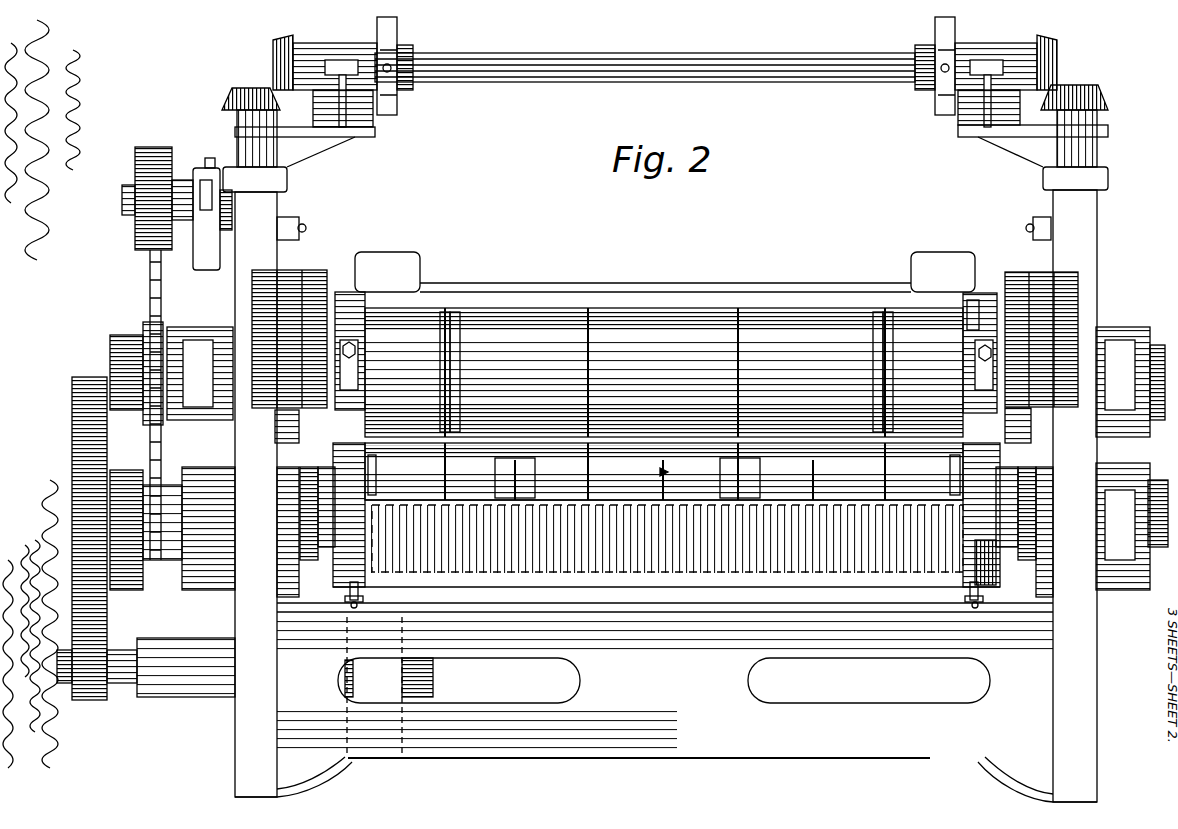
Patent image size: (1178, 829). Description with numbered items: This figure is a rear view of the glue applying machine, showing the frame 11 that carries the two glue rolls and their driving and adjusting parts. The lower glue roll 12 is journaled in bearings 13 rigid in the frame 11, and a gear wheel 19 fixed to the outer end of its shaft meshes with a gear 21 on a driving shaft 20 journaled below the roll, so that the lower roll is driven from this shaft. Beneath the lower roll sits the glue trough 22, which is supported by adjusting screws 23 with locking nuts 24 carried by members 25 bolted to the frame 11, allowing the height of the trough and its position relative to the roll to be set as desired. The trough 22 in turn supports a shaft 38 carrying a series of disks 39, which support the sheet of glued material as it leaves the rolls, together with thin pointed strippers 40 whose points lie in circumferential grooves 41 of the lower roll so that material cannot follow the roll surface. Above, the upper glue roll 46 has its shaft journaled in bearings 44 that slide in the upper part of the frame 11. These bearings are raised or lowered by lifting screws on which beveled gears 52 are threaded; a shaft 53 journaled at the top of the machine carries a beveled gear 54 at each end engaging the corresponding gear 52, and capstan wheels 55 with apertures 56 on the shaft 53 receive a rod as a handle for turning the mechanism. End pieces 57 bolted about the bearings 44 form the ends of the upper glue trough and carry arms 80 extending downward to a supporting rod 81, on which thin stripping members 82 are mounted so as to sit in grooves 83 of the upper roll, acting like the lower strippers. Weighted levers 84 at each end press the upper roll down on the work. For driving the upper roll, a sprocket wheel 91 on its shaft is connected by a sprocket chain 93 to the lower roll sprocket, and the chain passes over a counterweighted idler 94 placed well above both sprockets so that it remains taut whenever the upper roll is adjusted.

The frame 11 is at (252, 748).
The lower glue roll 12 is at (627, 457).
The bearings 13 is at (210, 572).
The gear wheel 19 is at (74, 402).
The driving shaft 20 is at (60, 687).
The gear 21 is at (88, 687).
The glue trough 22 is at (665, 550).
The adjusting screws 23 is at (350, 598).
The locking nuts 24 is at (354, 602).
The members 25 is at (477, 640).
The shaft 38 is at (790, 480).
The disks 39 is at (377, 497).
The strippers 40 is at (590, 478).
The circumferential grooves 41 is at (515, 498).
The bearings 44 is at (193, 343).
The upper glue roll 46 is at (528, 330).
The beveled gears 52 is at (235, 92).
The shaft 53 is at (708, 80).
The beveled gear 54 is at (276, 50).
The capstan wheels 55 is at (385, 47).
The apertures 56 is at (390, 72).
The end pieces 57 is at (977, 298).
The arms 80 is at (358, 362).
The supporting rod 81 is at (791, 402).
The stripping members 82 is at (447, 406).
The grooves 83 is at (443, 336).
The levers 84 is at (293, 226).
The sprocket wheel 91 is at (153, 353).
The sprocket chain 93 is at (150, 282).
The idler 94 is at (140, 170).